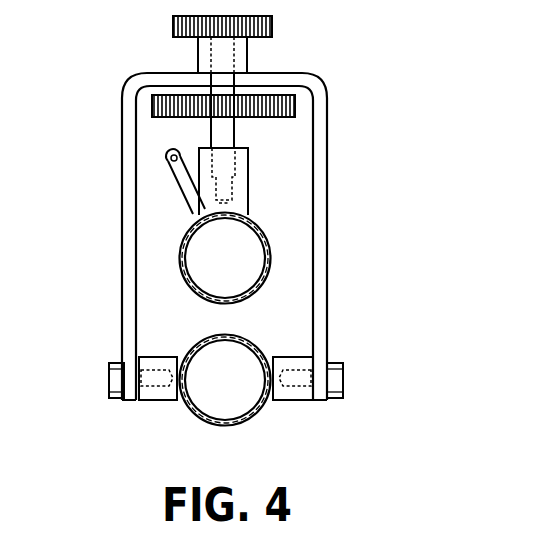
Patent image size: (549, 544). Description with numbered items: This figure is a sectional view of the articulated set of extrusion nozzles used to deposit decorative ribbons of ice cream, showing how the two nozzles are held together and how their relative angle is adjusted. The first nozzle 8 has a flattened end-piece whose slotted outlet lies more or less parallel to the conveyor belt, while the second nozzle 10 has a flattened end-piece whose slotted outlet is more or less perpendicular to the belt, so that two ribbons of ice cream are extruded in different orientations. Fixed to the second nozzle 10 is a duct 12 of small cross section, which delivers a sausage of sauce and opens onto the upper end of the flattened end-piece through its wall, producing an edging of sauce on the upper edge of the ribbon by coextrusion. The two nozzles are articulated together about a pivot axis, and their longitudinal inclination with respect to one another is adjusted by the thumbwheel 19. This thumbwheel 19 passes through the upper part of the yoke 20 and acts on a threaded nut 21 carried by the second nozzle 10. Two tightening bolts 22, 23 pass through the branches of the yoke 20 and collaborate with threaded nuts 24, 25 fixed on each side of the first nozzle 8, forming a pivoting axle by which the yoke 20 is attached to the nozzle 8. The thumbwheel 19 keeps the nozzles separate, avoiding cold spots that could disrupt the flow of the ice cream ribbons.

The first nozzle 8 is at (225, 427).
The second nozzle 10 is at (270, 258).
The duct 12 is at (168, 166).
The thumbwheel 19 is at (247, 58).
The yoke 20 is at (133, 132).
The threaded nut 21 is at (249, 181).
The tightening bolt 22 is at (108, 388).
The tightening bolt 23 is at (344, 384).
The threaded nut 24 is at (163, 404).
The threaded nut 25 is at (305, 404).